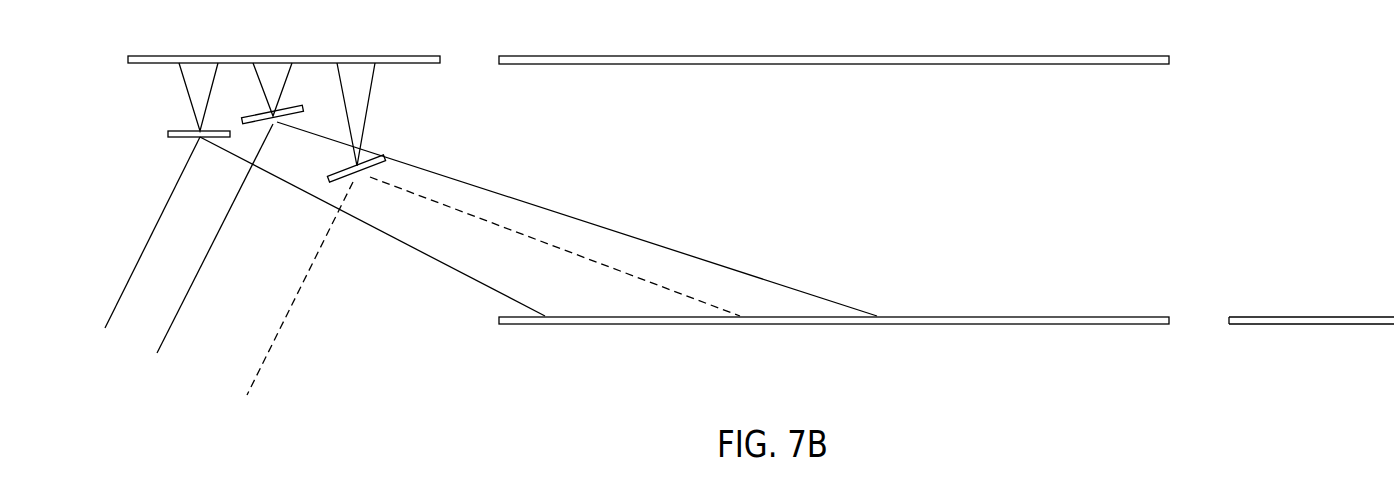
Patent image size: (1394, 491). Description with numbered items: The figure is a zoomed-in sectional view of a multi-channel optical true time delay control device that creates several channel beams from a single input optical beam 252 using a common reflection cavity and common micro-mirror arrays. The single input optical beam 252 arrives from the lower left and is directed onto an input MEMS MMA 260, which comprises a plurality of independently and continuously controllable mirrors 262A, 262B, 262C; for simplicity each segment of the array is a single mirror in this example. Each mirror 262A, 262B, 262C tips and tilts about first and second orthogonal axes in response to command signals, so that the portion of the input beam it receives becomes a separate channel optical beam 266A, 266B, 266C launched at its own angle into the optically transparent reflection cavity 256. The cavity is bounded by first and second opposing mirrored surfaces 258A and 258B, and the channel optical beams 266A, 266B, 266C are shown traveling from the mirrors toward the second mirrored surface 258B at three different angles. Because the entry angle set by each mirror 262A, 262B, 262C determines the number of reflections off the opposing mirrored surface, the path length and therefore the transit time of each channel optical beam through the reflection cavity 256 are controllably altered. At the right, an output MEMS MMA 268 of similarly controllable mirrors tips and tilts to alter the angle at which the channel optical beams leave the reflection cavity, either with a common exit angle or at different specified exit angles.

The single input optical beam 252 is at (222, 271).
The optically transparent reflection cavity 256 is at (851, 204).
The first mirrored surface 258A is at (835, 56).
The second mirrored surface 258B is at (1013, 317).
The input MEMS MMA 260 is at (283, 55).
The controllable mirror 262A is at (180, 130).
The controllable mirror 262B is at (248, 117).
The controllable mirror 262C is at (345, 173).
The channel optical beam 266A is at (448, 268).
The channel optical beam 266B is at (532, 238).
The channel optical beam 266C is at (577, 218).
The output MEMS MMA 268 is at (1327, 317).